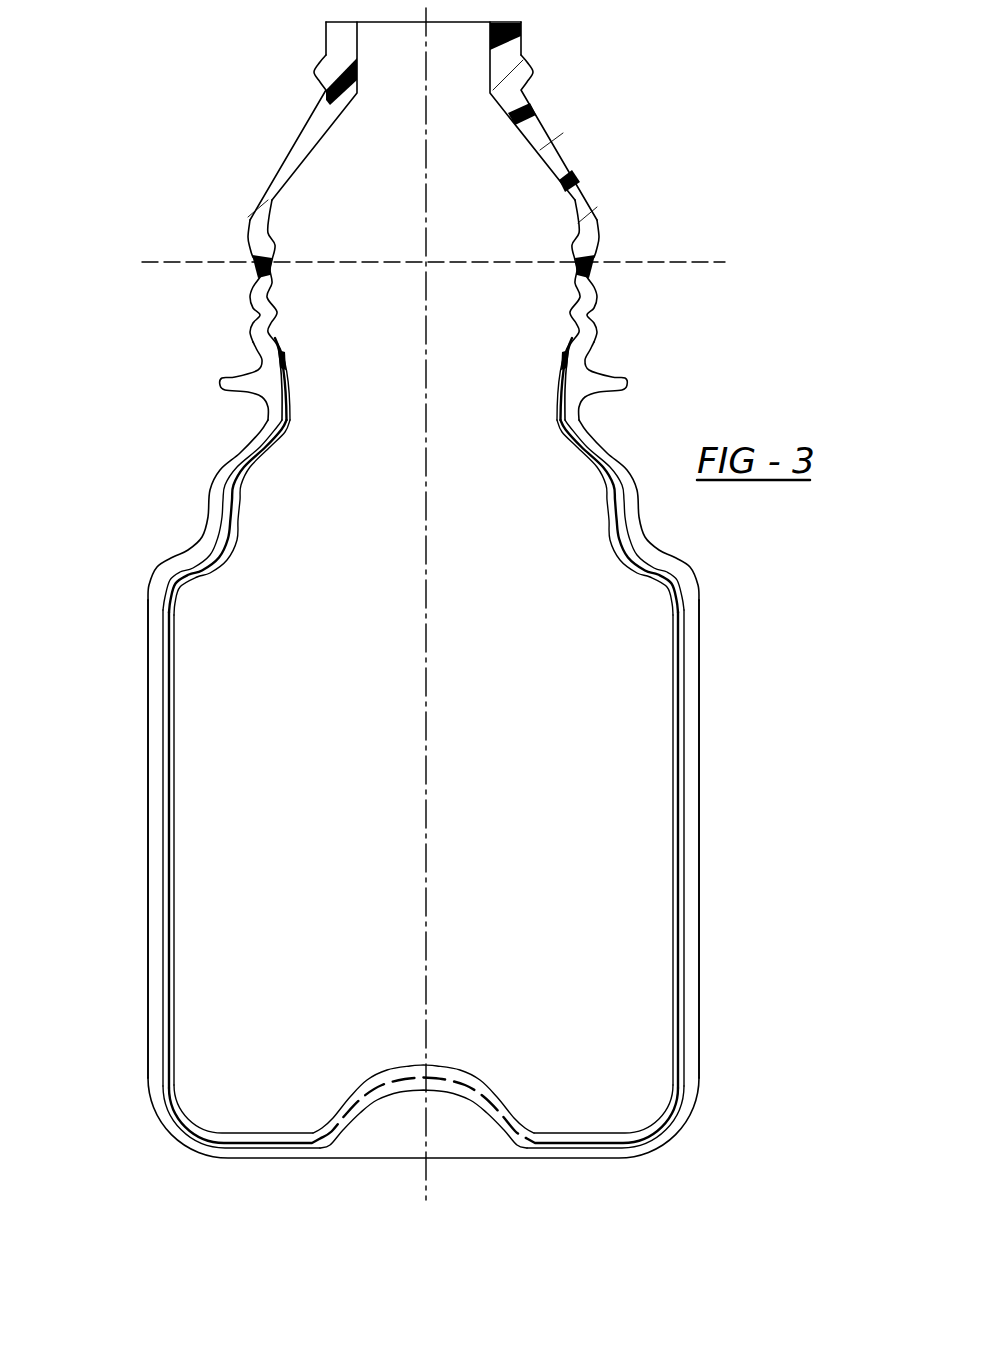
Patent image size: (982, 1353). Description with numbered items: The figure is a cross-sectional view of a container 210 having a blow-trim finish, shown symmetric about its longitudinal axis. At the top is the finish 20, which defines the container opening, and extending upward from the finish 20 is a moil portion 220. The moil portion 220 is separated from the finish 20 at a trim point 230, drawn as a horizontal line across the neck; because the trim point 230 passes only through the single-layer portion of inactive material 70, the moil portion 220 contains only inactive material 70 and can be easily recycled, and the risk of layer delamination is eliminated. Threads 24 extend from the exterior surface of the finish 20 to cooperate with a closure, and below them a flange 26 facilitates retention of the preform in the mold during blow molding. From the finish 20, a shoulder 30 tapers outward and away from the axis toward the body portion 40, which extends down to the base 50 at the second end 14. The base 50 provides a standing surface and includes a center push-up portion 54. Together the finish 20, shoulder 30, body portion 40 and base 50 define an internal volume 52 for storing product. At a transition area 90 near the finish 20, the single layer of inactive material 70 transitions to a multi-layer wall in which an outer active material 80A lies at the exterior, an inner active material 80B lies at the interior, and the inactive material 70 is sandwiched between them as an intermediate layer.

The container 210 is at (136, 118).
The moil portion 220 is at (283, 157).
The trim point 230 is at (175, 262).
The threads 24 is at (252, 287).
The finish 20 is at (250, 341).
The flange 26 is at (220, 379).
The transition area 90 is at (578, 340).
The shoulder 30 is at (231, 468).
The body portion 40 is at (148, 722).
The inactive material 70 is at (685, 745).
The outer active material 80A is at (698, 823).
The inner active material 80B is at (672, 975).
The internal volume 52 is at (222, 878).
The base 50 is at (240, 1158).
The second end 14 is at (290, 1158).
The center push-up portion 54 is at (407, 1094).